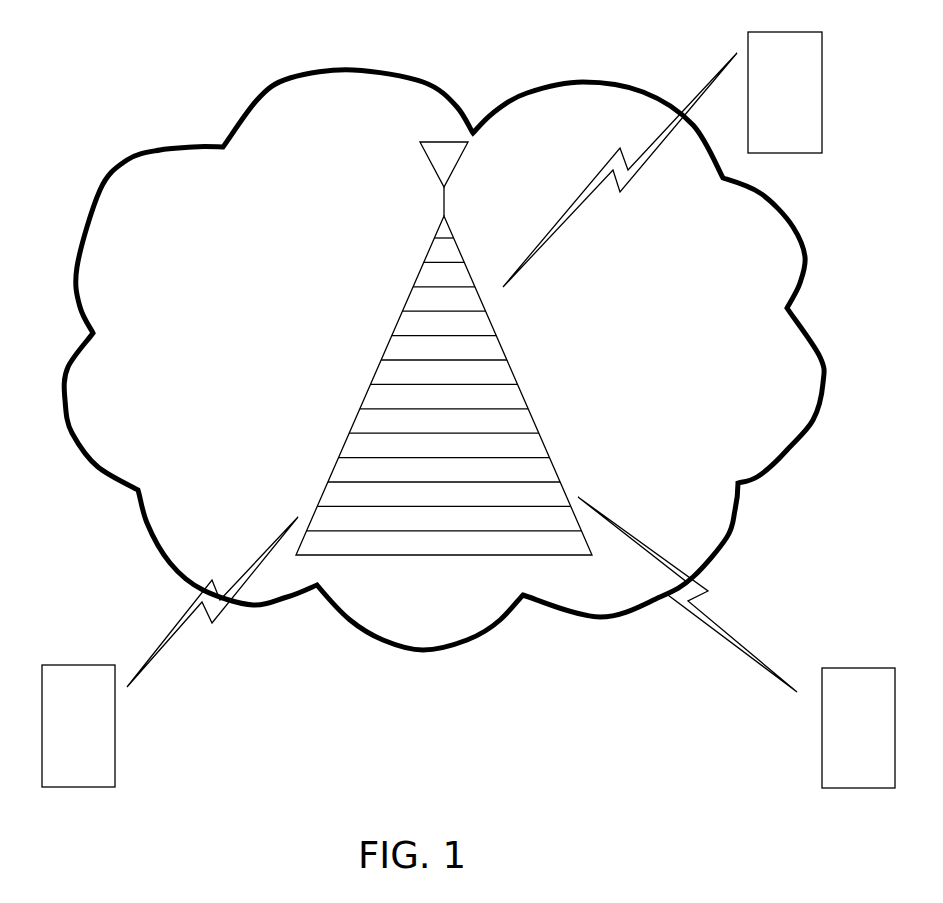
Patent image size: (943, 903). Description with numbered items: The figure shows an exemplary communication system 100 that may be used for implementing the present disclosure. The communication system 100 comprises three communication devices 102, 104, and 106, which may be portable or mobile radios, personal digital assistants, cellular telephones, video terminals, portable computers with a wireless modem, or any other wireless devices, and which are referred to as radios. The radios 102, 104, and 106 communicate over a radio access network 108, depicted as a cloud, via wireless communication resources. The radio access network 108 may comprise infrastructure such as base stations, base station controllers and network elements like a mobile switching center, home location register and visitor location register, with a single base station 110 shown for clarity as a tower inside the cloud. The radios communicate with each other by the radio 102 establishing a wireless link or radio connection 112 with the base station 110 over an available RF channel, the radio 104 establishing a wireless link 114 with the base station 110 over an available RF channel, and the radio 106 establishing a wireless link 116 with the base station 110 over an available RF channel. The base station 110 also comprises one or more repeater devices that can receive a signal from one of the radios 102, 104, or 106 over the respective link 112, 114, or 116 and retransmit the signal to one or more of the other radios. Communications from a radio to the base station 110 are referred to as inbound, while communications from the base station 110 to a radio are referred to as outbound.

The communication system 100 is at (226, 42).
The communication device 102 is at (88, 665).
The communication device 104 is at (762, 32).
The communication device 106 is at (855, 668).
The radio access network 108 is at (200, 142).
The base station 110 is at (397, 310).
The wireless link 112 is at (265, 543).
The wireless link 114 is at (713, 78).
The wireless link 116 is at (700, 622).